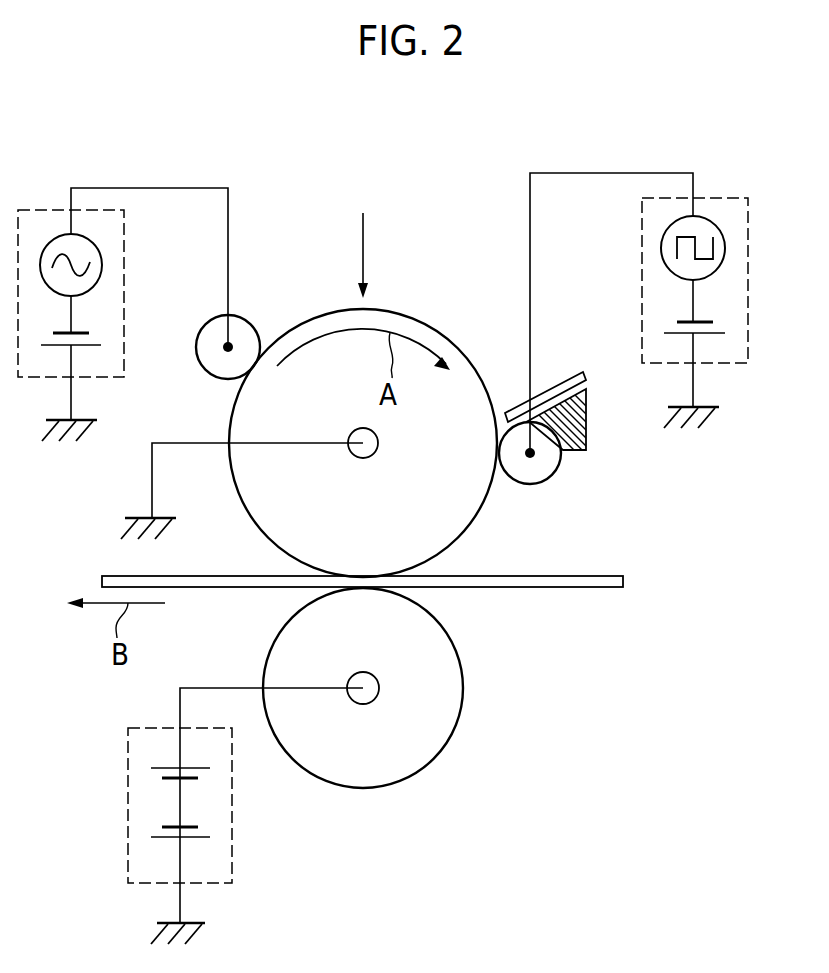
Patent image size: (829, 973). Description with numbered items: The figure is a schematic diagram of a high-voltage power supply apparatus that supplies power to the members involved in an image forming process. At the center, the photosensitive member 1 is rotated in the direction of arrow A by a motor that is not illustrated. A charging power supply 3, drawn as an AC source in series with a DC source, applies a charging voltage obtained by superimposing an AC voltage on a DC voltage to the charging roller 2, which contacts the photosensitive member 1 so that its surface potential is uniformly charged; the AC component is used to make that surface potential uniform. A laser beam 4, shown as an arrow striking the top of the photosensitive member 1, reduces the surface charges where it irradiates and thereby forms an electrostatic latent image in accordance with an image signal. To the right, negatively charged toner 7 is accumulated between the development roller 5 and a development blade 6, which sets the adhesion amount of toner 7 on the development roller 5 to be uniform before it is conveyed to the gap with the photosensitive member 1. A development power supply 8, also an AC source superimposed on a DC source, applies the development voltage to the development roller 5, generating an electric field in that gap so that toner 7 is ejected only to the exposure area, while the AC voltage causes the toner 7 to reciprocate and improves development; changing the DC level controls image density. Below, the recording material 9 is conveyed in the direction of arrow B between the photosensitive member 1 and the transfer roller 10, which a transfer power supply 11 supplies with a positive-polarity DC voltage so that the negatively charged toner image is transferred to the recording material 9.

The photosensitive member 1 is at (437, 327).
The charging roller 2 is at (250, 318).
The charging power supply 3 is at (43, 210).
The laser beam 4 is at (363, 240).
The development roller 5 is at (542, 485).
The development blade 6 is at (559, 380).
The toner 7 is at (586, 437).
The development power supply 8 is at (748, 222).
The recording material 9 is at (553, 587).
The transfer roller 10 is at (437, 757).
The transfer power supply 11 is at (128, 772).